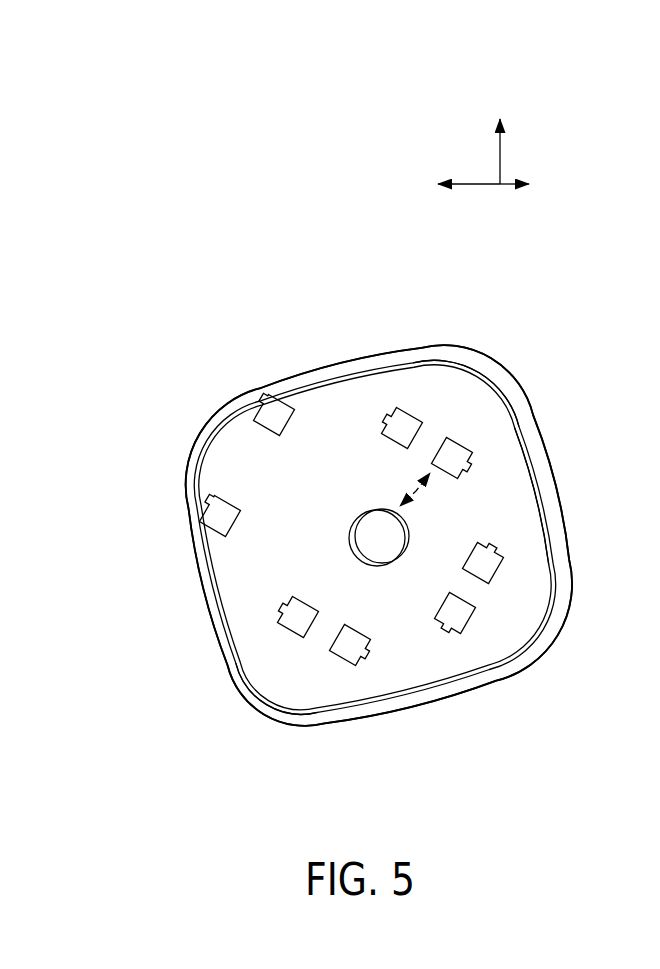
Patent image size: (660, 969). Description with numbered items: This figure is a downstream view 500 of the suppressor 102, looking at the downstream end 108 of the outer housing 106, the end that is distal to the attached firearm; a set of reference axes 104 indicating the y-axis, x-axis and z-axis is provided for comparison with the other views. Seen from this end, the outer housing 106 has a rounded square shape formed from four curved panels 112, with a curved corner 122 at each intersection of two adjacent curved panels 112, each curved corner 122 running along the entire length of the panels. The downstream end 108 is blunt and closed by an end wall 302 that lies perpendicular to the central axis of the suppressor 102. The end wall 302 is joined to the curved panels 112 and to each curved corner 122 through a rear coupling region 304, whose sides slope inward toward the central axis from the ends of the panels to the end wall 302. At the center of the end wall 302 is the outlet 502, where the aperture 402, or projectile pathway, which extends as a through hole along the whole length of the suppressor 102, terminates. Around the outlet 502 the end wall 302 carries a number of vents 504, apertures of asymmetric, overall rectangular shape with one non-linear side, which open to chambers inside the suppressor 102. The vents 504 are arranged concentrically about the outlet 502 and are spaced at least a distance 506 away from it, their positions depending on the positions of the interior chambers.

The downstream view 500 is at (193, 138).
The suppressor 102 is at (281, 185).
The set of reference axes 104 is at (526, 151).
The outer housing 106 is at (295, 273).
The downstream end 108 is at (163, 370).
The curved panels 112 is at (306, 373).
The curved corner 122 is at (480, 352).
The end wall 302 is at (510, 461).
The rear coupling region 304 is at (500, 387).
The aperture 402 is at (372, 547).
The outlet 502 is at (372, 518).
The vents 504 is at (393, 426).
The distance 506 is at (418, 492).